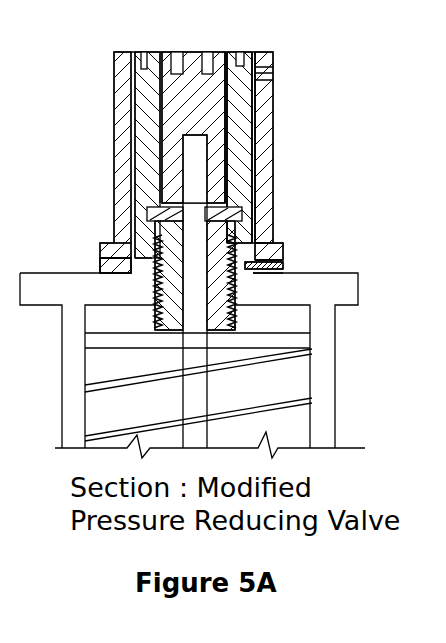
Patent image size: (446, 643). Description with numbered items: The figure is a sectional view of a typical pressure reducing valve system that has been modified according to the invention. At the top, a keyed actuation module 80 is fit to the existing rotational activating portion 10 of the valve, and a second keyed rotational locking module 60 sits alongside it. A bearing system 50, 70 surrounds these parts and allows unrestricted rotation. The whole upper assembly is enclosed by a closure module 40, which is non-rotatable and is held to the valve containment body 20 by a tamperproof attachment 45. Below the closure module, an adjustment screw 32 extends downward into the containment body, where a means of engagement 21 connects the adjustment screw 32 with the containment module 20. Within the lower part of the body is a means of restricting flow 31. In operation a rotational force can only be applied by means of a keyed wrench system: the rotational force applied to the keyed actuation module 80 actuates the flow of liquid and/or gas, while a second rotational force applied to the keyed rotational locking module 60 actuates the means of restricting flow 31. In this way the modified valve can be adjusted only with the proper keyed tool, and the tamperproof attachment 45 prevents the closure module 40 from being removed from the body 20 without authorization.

The rotational activating portion 10 is at (197, 247).
The valve containment body 20 is at (335, 292).
The means of engagement 21 is at (100, 258).
The means of restricting flow 31 is at (302, 340).
The adjustment screw 32 is at (167, 233).
The closure module 40 is at (263, 211).
The tamperproof attachment 45 is at (283, 264).
The bearing system 50 is at (250, 185).
The second keyed rotational locking module 60 is at (238, 162).
The bearing system 70 is at (228, 115).
The keyed actuation module 80 is at (210, 93).